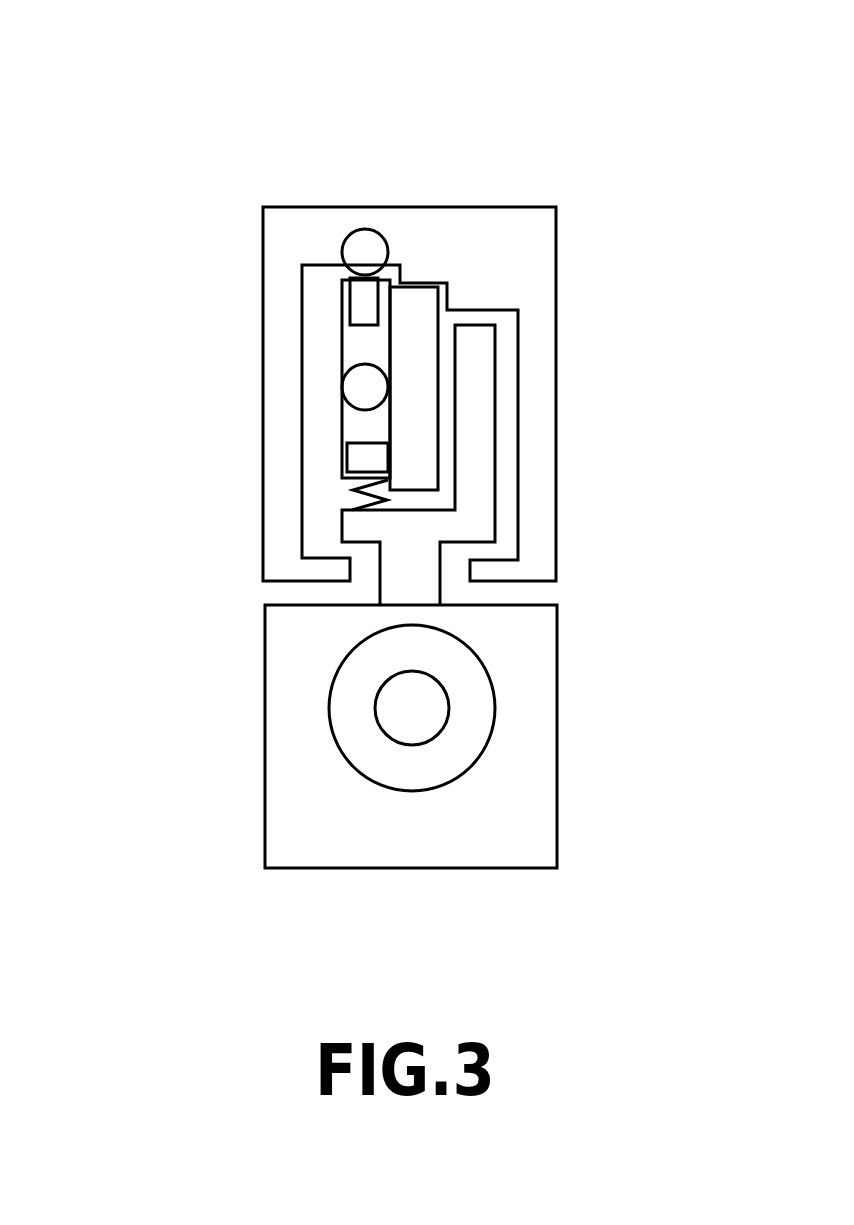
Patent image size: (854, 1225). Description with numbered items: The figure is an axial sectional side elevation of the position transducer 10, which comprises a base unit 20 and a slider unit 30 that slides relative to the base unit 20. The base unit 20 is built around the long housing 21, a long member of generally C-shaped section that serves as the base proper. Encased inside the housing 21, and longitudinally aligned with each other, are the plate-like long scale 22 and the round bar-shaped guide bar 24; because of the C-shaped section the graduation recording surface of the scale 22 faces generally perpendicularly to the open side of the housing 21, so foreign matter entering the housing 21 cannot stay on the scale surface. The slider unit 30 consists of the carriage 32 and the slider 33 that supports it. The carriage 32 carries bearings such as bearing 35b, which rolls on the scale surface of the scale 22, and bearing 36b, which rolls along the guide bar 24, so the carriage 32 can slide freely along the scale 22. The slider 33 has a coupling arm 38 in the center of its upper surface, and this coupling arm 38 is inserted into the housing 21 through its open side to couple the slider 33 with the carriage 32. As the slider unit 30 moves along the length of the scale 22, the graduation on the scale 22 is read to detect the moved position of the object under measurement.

The position transducer 10 is at (122, 158).
The base unit 20 is at (690, 92).
The housing 21 is at (495, 233).
The scale 22 is at (425, 367).
The guide bar 24 is at (365, 246).
The slider unit 30 is at (105, 505).
The carriage 32 is at (362, 427).
The slider 33 is at (297, 747).
The bearing 35b is at (370, 457).
The bearing 36b is at (363, 299).
The coupling arm 38 is at (480, 490).